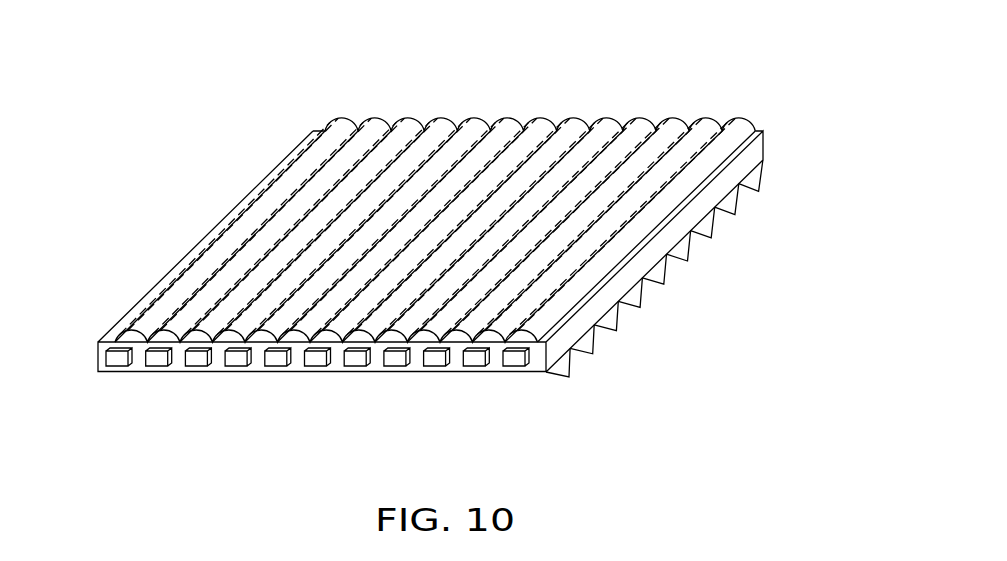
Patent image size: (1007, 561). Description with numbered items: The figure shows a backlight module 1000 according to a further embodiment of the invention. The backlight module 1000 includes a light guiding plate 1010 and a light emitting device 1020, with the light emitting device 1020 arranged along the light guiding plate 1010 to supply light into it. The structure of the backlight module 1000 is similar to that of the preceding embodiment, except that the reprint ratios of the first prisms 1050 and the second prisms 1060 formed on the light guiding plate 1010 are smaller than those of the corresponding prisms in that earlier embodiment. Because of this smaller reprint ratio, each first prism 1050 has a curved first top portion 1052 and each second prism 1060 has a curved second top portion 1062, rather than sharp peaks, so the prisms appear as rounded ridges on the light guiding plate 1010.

The backlight module 1000 is at (455, 232).
The light guiding plate 1010 is at (455, 202).
The light emitting device 1020 is at (117, 362).
The first prisms 1050 is at (543, 130).
The curved first top portion 1052 is at (538, 117).
The second prisms 1060 is at (510, 132).
The curved second top portion 1062 is at (575, 117).